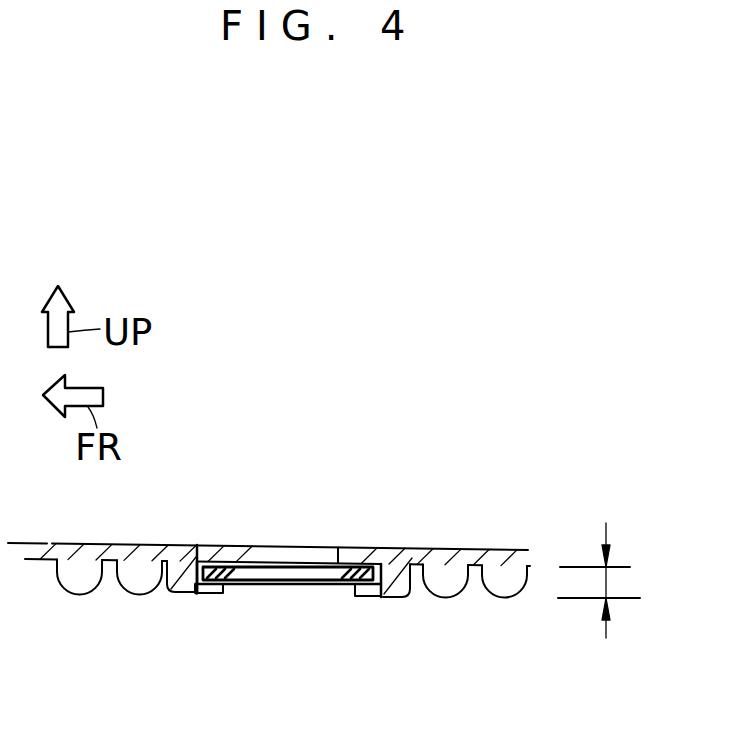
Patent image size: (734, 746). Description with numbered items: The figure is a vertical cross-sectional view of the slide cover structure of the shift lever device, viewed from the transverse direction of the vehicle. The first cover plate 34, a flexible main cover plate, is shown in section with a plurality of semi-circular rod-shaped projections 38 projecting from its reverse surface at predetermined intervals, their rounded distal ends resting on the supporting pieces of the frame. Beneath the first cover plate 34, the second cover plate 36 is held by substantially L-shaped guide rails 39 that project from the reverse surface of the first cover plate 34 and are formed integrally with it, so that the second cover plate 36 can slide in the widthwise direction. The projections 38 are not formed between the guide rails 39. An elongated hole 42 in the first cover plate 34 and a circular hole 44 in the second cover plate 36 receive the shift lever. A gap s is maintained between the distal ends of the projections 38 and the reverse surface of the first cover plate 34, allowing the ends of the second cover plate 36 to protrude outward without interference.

The first cover plate 34 is at (400, 545).
The second cover plate 36 is at (318, 600).
The projections 38 is at (88, 591).
The guide rails 39 is at (197, 594).
The elongated hole 42 is at (239, 553).
The circular hole 44 is at (242, 584).
The gap s is at (606, 583).